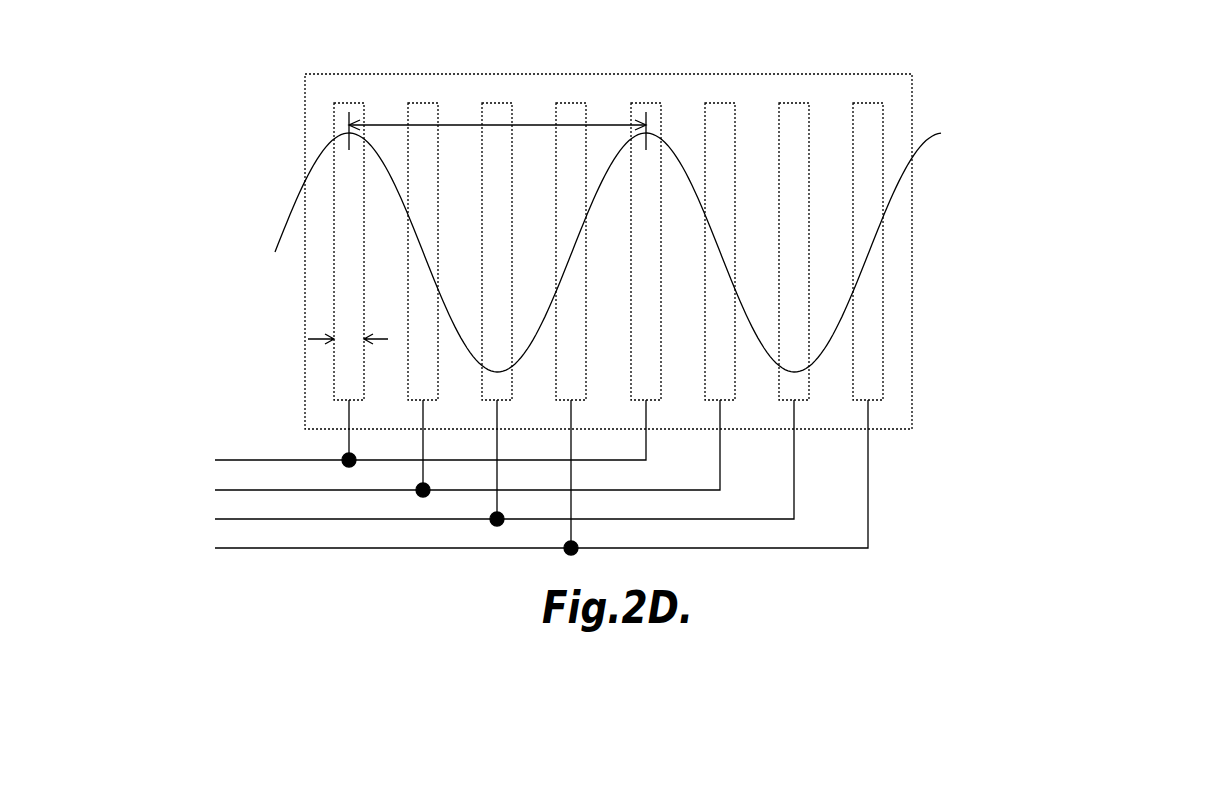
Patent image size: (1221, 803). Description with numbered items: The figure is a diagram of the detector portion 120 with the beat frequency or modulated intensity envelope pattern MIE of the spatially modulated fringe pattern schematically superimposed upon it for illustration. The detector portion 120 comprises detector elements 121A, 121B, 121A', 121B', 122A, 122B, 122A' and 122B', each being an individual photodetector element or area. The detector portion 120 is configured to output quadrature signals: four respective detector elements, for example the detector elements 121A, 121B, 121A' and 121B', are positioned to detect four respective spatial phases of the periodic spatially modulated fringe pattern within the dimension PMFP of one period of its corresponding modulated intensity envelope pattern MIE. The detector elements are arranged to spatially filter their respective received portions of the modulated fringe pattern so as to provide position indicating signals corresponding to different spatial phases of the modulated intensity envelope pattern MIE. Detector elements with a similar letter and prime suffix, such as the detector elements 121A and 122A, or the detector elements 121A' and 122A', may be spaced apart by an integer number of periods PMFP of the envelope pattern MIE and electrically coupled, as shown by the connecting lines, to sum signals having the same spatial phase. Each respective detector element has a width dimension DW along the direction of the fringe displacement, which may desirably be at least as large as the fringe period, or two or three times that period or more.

The detector portion 120 is at (912, 383).
The detector element 121A is at (404, 283).
The detector element 121B is at (436, 300).
The detector element 121A' is at (473, 303).
The detector element 121B' is at (507, 304).
The detector element 122A is at (684, 215).
The detector element 122B is at (755, 215).
The detector element 122A' is at (832, 215).
The detector element 122B' is at (905, 215).
The modulated intensity envelope pattern MIE is at (936, 137).
The period of the modulated intensity envelope pattern PMFP is at (617, 122).
The width dimension DW is at (318, 342).